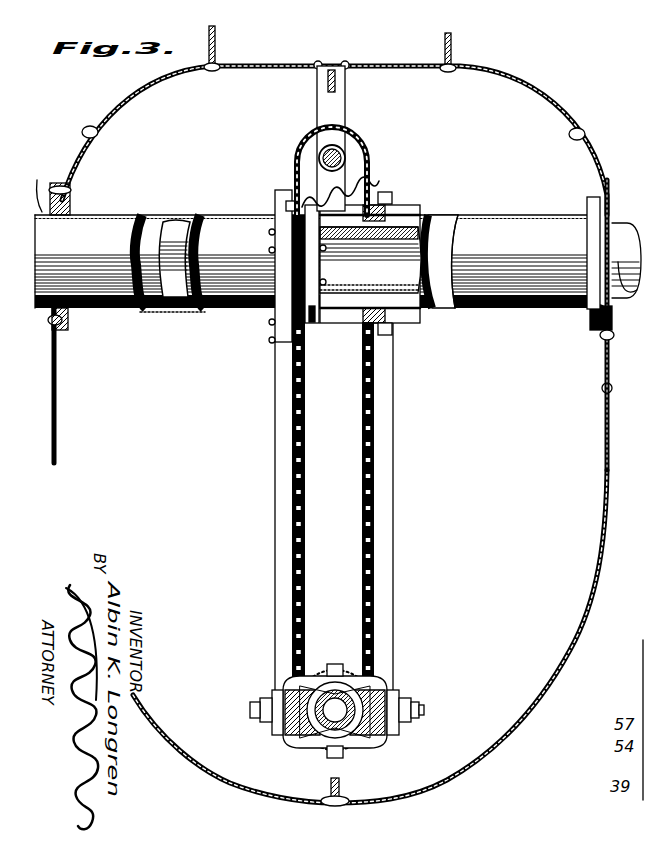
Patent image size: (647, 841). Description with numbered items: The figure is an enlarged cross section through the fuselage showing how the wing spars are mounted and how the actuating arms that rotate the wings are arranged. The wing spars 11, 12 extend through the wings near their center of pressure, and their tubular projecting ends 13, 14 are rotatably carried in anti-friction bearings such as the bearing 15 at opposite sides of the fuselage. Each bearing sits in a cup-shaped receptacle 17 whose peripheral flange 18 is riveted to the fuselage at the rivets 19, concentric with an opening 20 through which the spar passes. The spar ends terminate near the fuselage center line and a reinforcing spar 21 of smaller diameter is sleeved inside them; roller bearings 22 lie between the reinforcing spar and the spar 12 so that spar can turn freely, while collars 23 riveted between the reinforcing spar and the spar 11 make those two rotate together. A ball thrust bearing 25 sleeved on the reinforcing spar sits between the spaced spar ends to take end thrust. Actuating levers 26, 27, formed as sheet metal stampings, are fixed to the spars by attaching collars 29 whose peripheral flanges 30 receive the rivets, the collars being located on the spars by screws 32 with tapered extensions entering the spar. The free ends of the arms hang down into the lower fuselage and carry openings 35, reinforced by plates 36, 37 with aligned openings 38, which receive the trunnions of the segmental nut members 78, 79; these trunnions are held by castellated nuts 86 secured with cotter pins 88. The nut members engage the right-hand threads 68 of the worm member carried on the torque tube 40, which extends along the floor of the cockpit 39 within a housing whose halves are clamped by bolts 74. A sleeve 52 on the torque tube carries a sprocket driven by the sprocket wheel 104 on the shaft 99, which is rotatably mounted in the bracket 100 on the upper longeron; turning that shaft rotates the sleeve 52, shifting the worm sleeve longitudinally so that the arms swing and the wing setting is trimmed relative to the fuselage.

The wing spar 11 is at (126, 214).
The wing spar 12 is at (570, 222).
The projecting end of spar 13 is at (43, 185).
The projecting end of spar 14 is at (616, 224).
The anti-friction bearing 15 is at (70, 192).
The cup-shaped receptacle 17 is at (68, 325).
The peripheral flange 18 is at (83, 135).
The rivets 19 is at (52, 338).
The opening 20 is at (49, 321).
The reinforcing spar 21 is at (192, 216).
The roller bearings 22 is at (358, 243).
The collars 23 is at (314, 318).
The ball thrust bearing 25 is at (340, 190).
The actuating lever 26 is at (280, 467).
The actuating lever 27 is at (386, 476).
The attaching collar 29 is at (276, 203).
The peripheral flange 30 is at (290, 247).
The screw 32 is at (292, 200).
The opening 35 is at (412, 712).
The reinforcing plate 36 is at (392, 735).
The reinforcing plate 37 is at (420, 716).
The opening 38 is at (404, 700).
The cockpit 39 is at (473, 758).
The torque tube 40 is at (345, 738).
The sleeve 52 is at (312, 738).
The right-hand threads 68 is at (346, 676).
The bolts 74 is at (330, 756).
The segmental nut member 78 is at (280, 736).
The segmental nut member 79 is at (375, 690).
The castellated nut 86 is at (254, 720).
The cotter pin 88 is at (264, 700).
The shaft 99 is at (346, 153).
The bracket 100 is at (336, 112).
The sprocket wheel 104 is at (372, 166).